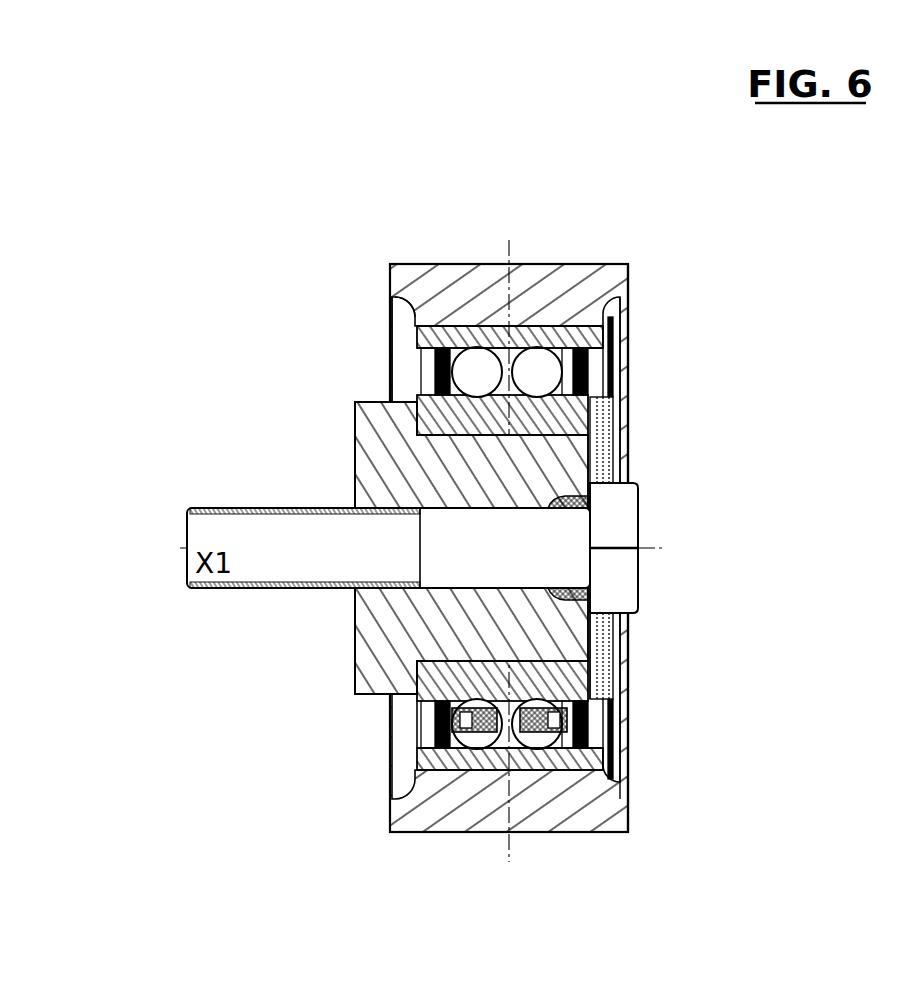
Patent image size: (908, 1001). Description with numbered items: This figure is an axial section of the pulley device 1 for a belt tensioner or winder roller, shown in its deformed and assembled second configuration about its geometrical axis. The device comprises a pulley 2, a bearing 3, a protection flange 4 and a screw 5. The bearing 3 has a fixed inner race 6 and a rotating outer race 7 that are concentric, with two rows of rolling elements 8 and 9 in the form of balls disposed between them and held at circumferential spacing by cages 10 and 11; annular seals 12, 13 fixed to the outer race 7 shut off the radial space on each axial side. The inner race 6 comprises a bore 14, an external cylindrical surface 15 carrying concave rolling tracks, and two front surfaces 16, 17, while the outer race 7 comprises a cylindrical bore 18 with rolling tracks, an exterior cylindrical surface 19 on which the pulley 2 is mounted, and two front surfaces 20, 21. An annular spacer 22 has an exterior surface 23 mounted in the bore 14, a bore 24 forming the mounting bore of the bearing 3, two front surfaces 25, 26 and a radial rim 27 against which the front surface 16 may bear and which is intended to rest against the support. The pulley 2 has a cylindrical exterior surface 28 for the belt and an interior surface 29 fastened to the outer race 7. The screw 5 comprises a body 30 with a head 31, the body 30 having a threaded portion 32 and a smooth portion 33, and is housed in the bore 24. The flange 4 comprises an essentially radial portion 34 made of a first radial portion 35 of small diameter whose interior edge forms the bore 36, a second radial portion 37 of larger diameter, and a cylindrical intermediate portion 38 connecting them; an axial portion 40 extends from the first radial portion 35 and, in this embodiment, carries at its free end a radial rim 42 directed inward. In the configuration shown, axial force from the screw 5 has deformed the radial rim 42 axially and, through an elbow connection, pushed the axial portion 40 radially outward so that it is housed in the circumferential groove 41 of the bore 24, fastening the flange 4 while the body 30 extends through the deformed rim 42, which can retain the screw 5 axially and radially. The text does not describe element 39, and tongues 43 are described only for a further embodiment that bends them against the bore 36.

The pulley device 1 is at (205, 342).
The pulley 2 is at (411, 254).
The bearing 3 is at (396, 348).
The protection flange 4 is at (624, 766).
The screw 5 is at (168, 547).
The inner race 6 is at (410, 420).
The outer race 7 is at (478, 750).
The rolling elements 8 is at (477, 372).
The rolling elements 9 is at (537, 372).
The cage 10 is at (447, 745).
The cage 11 is at (537, 752).
The annular seal 12 is at (418, 771).
The annular seal 13 is at (590, 735).
The bore 14 is at (438, 452).
The external cylindrical surface 15 is at (440, 768).
The front surface 16 is at (412, 745).
The front surface 17 is at (627, 702).
The cylindrical bore 18 is at (437, 372).
The exterior cylindrical surface 19 is at (456, 292).
The front surface 20 is at (392, 330).
The front surface 21 is at (628, 312).
The spacer 22 is at (345, 632).
The exterior surface 23 is at (440, 690).
The bore 24 is at (376, 534).
The front surface 25 is at (355, 603).
The front surface 26 is at (600, 643).
The radial rim 27 is at (372, 483).
The cylindrical exterior surface 28 is at (484, 775).
The interior surface 29 is at (570, 326).
The body 30 is at (187, 512).
The head 31 is at (638, 603).
The threaded portion 32 is at (240, 590).
The smooth portion 33 is at (502, 505).
The radial portion 34 is at (738, 282).
The first radial portion 35 is at (612, 440).
The bore 36 is at (610, 518).
The second radial portion 37 is at (613, 340).
The intermediate portion 38 is at (613, 410).
The flange centre 39 is at (640, 528).
The axial portion 40 is at (548, 574).
The circumferential groove 41 is at (612, 622).
The radial rim 42 is at (558, 496).
The tongues 43 is at (630, 592).